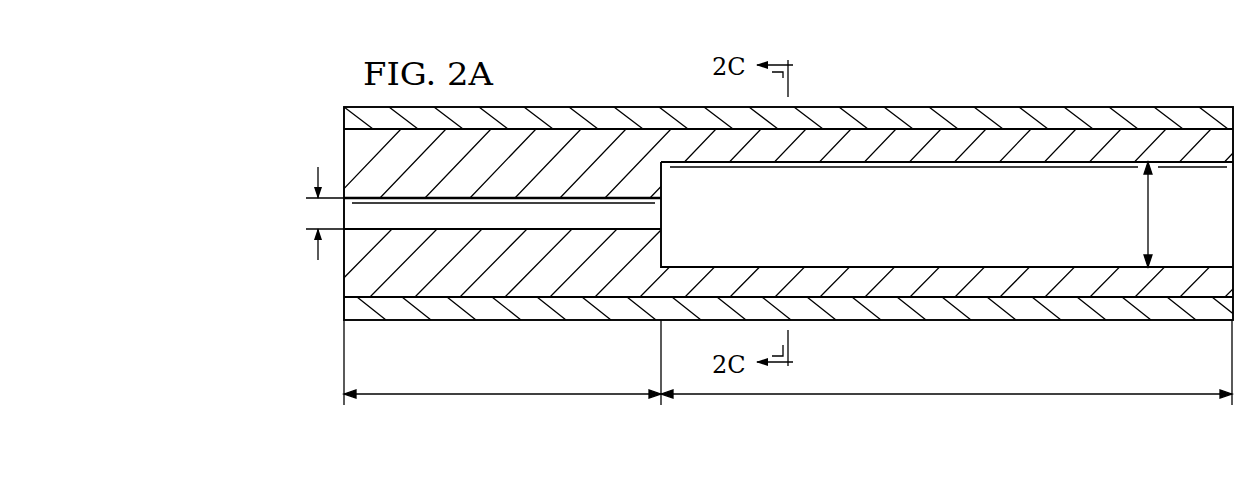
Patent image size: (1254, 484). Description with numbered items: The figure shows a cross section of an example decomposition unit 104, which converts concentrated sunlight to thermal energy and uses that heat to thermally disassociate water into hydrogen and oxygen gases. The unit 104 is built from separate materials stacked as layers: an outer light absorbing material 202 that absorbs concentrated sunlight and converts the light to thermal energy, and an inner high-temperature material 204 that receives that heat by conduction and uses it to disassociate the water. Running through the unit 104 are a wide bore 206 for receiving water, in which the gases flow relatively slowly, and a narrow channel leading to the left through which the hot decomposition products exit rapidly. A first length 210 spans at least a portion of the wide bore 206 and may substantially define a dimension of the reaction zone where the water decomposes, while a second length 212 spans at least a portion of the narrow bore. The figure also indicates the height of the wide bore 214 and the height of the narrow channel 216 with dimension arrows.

The decomposition unit 104 is at (991, 74).
The light absorbing material 202 is at (1138, 98).
The high-temperature material 204 is at (353, 288).
The wide bore 206 is at (927, 227).
The first length 210 is at (1032, 394).
The second length 212 is at (503, 394).
The cavity height 214 is at (1148, 213).
The channel gap height 216 is at (318, 256).